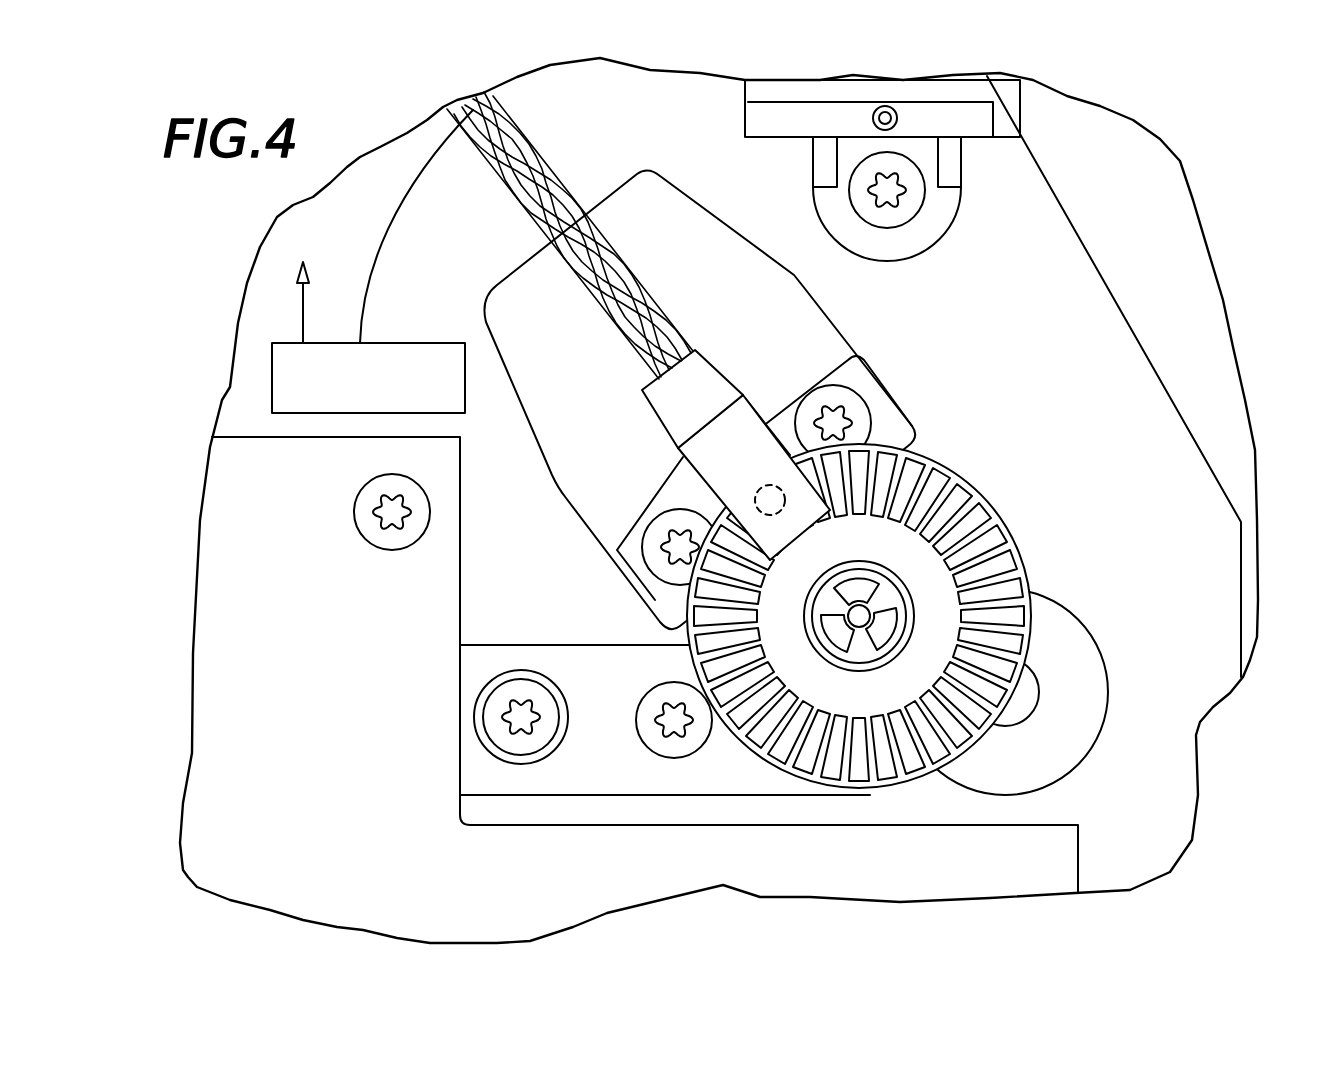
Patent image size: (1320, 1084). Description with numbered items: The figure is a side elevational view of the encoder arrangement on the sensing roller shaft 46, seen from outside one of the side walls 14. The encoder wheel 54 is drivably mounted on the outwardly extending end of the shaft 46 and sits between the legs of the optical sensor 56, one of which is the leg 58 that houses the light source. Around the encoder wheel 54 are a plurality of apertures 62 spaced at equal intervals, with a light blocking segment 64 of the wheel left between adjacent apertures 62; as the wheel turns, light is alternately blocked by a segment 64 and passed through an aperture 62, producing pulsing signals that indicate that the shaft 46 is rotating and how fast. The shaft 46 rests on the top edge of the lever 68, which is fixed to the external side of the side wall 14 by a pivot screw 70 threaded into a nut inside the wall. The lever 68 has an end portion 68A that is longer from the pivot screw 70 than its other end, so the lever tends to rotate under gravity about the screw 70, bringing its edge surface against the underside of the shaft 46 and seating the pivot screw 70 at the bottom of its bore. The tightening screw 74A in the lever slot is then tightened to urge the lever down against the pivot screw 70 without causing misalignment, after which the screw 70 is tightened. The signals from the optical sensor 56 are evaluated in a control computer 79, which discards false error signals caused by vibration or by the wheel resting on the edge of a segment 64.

The side wall 14 is at (478, 563).
The shaft 46 is at (870, 604).
The encoder wheel 54 is at (1007, 590).
The optical sensor 56 is at (747, 378).
The leg 58 is at (717, 473).
The apertures 62 is at (947, 482).
The light blocking segment 64 is at (957, 490).
The lever 68 is at (573, 780).
The end portion 68A is at (483, 778).
The pivot screw 70 is at (697, 740).
The tightening screw 74A is at (522, 700).
The control computer 79 is at (272, 388).